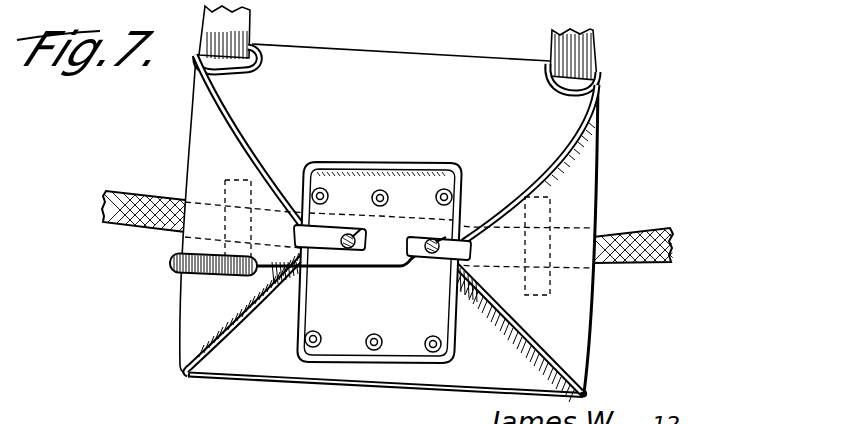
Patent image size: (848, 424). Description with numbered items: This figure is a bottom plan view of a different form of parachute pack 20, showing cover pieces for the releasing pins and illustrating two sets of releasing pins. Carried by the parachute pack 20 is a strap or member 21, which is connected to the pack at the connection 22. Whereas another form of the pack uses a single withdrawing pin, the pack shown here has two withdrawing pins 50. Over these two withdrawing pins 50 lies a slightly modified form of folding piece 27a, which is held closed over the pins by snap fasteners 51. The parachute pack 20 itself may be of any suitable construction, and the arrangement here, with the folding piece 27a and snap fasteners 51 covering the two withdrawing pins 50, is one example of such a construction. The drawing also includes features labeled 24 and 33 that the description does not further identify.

The parachute pack 20 is at (247, 362).
The strap or member 21 is at (130, 200).
The connection point 22 is at (545, 247).
The top closure flap 24 is at (352, 62).
The folding piece 27a is at (338, 187).
The sleeve 33 is at (172, 273).
The withdrawing pins 50 is at (350, 258).
The snap fasteners 51 is at (447, 165).